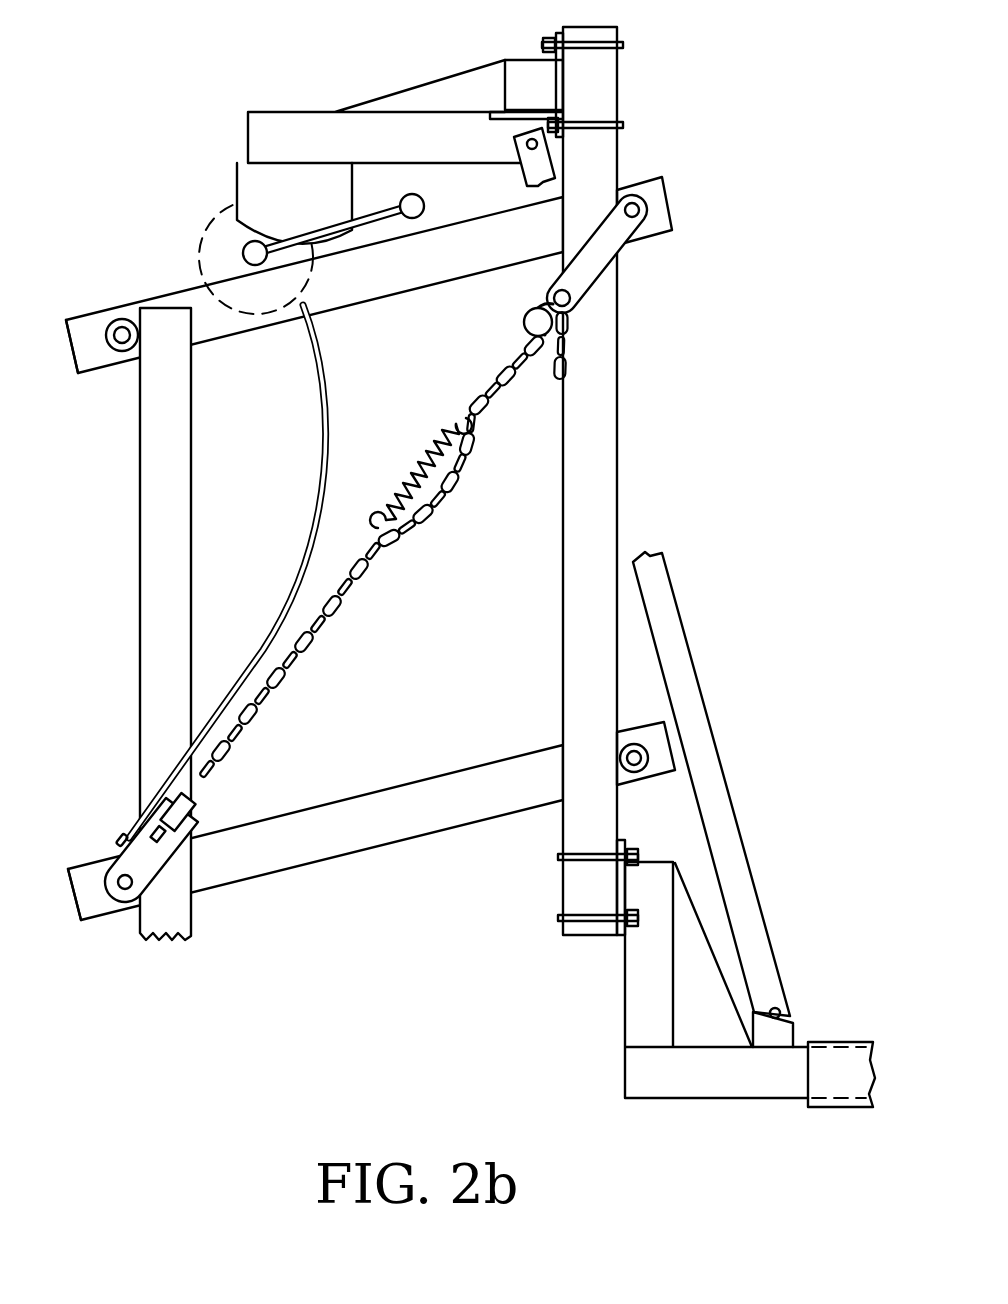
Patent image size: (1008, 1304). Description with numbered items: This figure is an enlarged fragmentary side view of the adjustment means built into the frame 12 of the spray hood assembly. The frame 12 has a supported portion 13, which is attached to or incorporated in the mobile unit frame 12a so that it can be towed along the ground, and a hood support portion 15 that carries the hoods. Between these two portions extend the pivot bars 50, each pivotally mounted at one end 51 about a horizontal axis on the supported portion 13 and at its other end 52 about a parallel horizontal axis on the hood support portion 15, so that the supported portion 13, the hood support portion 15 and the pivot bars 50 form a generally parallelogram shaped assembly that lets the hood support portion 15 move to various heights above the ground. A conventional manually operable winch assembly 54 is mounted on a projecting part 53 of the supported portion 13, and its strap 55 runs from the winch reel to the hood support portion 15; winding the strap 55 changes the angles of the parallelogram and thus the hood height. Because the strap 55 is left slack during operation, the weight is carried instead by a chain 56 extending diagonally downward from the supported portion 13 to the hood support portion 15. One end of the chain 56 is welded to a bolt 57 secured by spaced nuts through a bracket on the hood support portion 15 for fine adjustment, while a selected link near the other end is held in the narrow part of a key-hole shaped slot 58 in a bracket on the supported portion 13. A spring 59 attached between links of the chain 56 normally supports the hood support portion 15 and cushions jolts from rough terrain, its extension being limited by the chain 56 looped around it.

The frame 12 is at (624, 144).
The mobile unit frame 12a is at (863, 1043).
The supported portion 13 is at (601, 465).
The hood support portion 15 is at (193, 918).
The pivot bars 50 is at (395, 286).
The one end 51 is at (657, 192).
The other end 52 is at (86, 366).
The projecting part 53 is at (379, 128).
The winch assembly 54 is at (240, 185).
The strap 55 is at (323, 428).
The chains 56 is at (318, 632).
The bolt 57 is at (207, 788).
The key-hole shaped slot 58 is at (541, 302).
The spring 59 is at (415, 478).